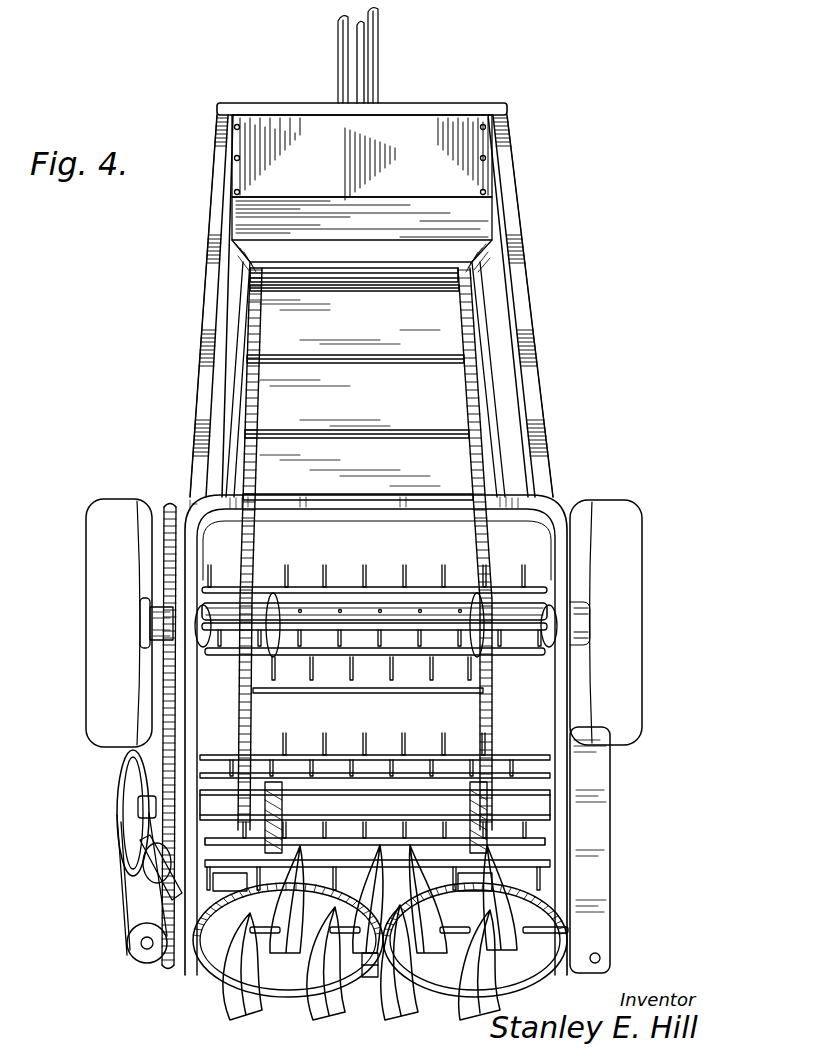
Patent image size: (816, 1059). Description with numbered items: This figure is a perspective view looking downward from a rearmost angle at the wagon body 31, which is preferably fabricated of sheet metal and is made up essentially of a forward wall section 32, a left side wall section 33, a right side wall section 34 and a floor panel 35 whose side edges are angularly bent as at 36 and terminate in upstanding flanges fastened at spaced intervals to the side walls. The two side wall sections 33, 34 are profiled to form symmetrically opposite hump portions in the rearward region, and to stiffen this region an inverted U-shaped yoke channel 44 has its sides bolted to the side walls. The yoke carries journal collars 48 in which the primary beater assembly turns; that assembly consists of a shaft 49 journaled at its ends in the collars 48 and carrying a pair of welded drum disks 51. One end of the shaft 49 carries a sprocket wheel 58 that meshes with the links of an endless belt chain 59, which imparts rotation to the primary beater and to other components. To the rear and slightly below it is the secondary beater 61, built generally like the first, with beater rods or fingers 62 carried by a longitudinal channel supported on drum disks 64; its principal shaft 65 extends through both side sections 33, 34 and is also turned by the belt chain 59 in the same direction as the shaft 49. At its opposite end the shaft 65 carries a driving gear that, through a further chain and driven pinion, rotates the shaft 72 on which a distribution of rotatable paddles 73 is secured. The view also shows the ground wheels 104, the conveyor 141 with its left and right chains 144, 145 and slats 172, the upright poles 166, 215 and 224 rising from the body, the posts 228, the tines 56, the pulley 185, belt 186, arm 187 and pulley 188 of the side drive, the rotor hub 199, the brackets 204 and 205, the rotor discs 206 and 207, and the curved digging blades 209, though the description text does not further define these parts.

The wagon body 31 is at (519, 122).
The forward wall section 32 is at (412, 130).
The left side wall section 33 is at (222, 366).
The right side wall section 34 is at (512, 358).
The floor panel 35 is at (447, 313).
The angularly bent side edge 36 is at (243, 288).
The inverted U-shaped yoke channel 44 is at (370, 497).
The journal collar 48 is at (170, 637).
The shaft 49 is at (374, 611).
The drum disk 51 is at (267, 597).
The agitator tines 56 is at (442, 578).
The sprocket wheel 58 is at (167, 614).
The endless belt chain 59 is at (163, 711).
The secondary beater 61 is at (386, 745).
The beater rods 62 is at (465, 818).
The drum disk 64 is at (269, 780).
The principal shaft 65 is at (315, 812).
The shaft 72 is at (567, 913).
The rotatable paddles 73 is at (330, 1003).
The ground wheel 104 is at (103, 508).
The conveyor 141 is at (365, 493).
The left conveyor chain 144 is at (252, 401).
The right conveyor chain 145 is at (470, 383).
The handle pole 166 is at (339, 64).
The conveyor slat 172 is at (353, 292).
The drive pulley 185 is at (142, 786).
The drive belt 186 is at (123, 900).
The pulley arm 187 is at (154, 848).
The idler pulley 188 is at (145, 963).
The rotor hub 199 is at (368, 978).
The left bracket tag 204 is at (230, 882).
The right bracket tag 205 is at (475, 882).
The left rotor disc 206 is at (205, 948).
The right rotor disc 207 is at (443, 985).
The curved digging blade 209 is at (301, 977).
The control lever 215 is at (379, 50).
The control lever 224 is at (363, 82).
The upright post 228 is at (215, 224).